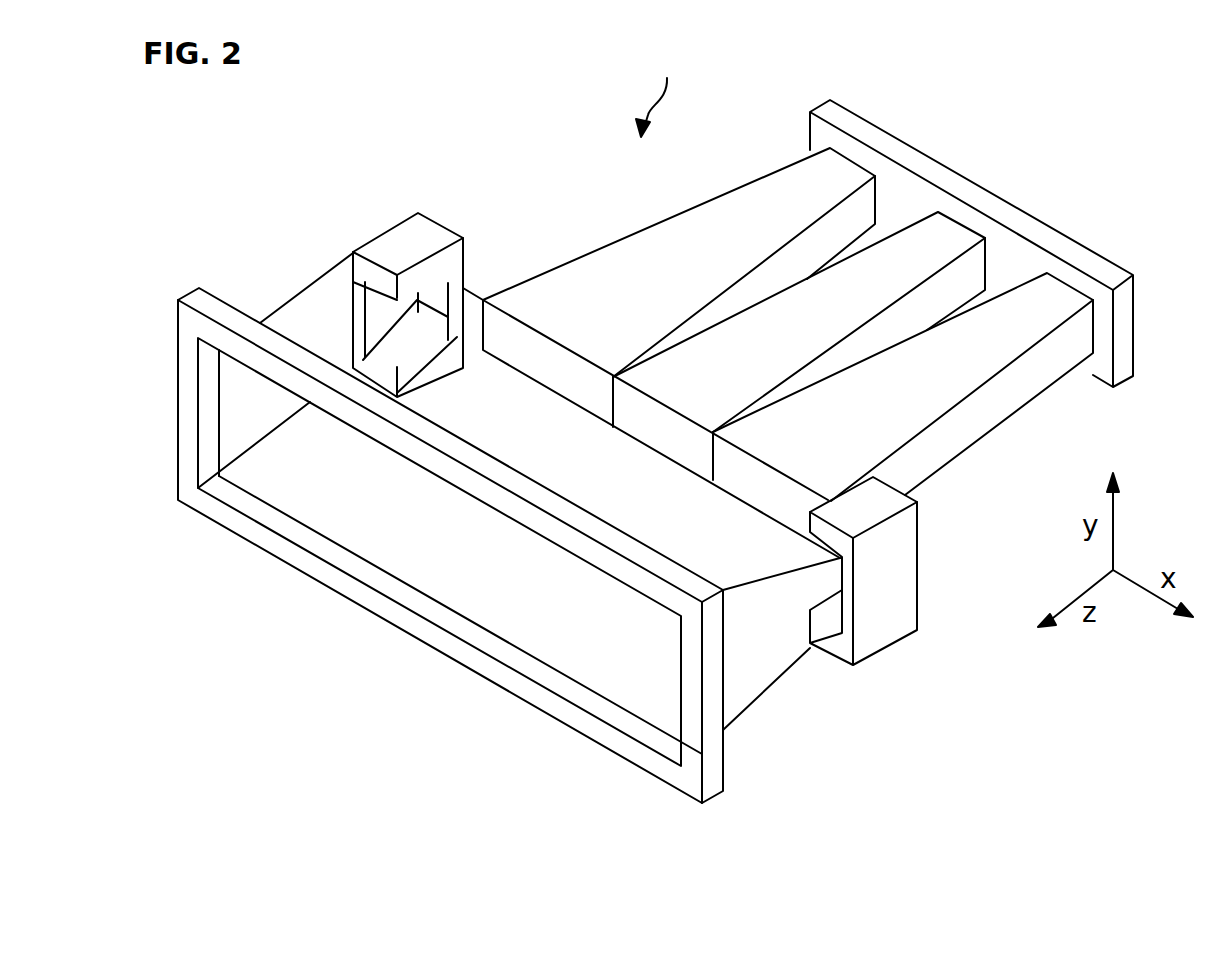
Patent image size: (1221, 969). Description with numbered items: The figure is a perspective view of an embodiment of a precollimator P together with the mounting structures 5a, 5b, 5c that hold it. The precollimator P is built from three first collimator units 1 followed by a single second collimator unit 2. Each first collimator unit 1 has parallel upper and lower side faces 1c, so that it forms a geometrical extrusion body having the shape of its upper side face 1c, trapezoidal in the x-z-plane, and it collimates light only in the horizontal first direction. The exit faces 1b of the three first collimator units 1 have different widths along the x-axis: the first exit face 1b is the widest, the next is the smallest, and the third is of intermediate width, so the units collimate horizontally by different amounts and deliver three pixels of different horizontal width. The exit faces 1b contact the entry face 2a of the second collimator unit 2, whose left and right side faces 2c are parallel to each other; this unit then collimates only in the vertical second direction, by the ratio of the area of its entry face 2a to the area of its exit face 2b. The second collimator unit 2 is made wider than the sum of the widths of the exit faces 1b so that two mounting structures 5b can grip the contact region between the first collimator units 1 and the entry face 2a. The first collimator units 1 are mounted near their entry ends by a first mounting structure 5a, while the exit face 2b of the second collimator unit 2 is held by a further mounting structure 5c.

The first collimator unit 1 is at (788, 331).
The exit face 1b is at (548, 360).
The upper and lower side face 1c is at (660, 297).
The second collimator unit 2 is at (311, 313).
The entry face 2a is at (475, 310).
The exit face 2b is at (403, 537).
The left and right side face 2c is at (238, 413).
The first mounting structure 5a is at (878, 138).
The mounting structure 5b is at (400, 242).
The further mounting structure 5c is at (210, 313).
The precollimator P is at (656, 90).